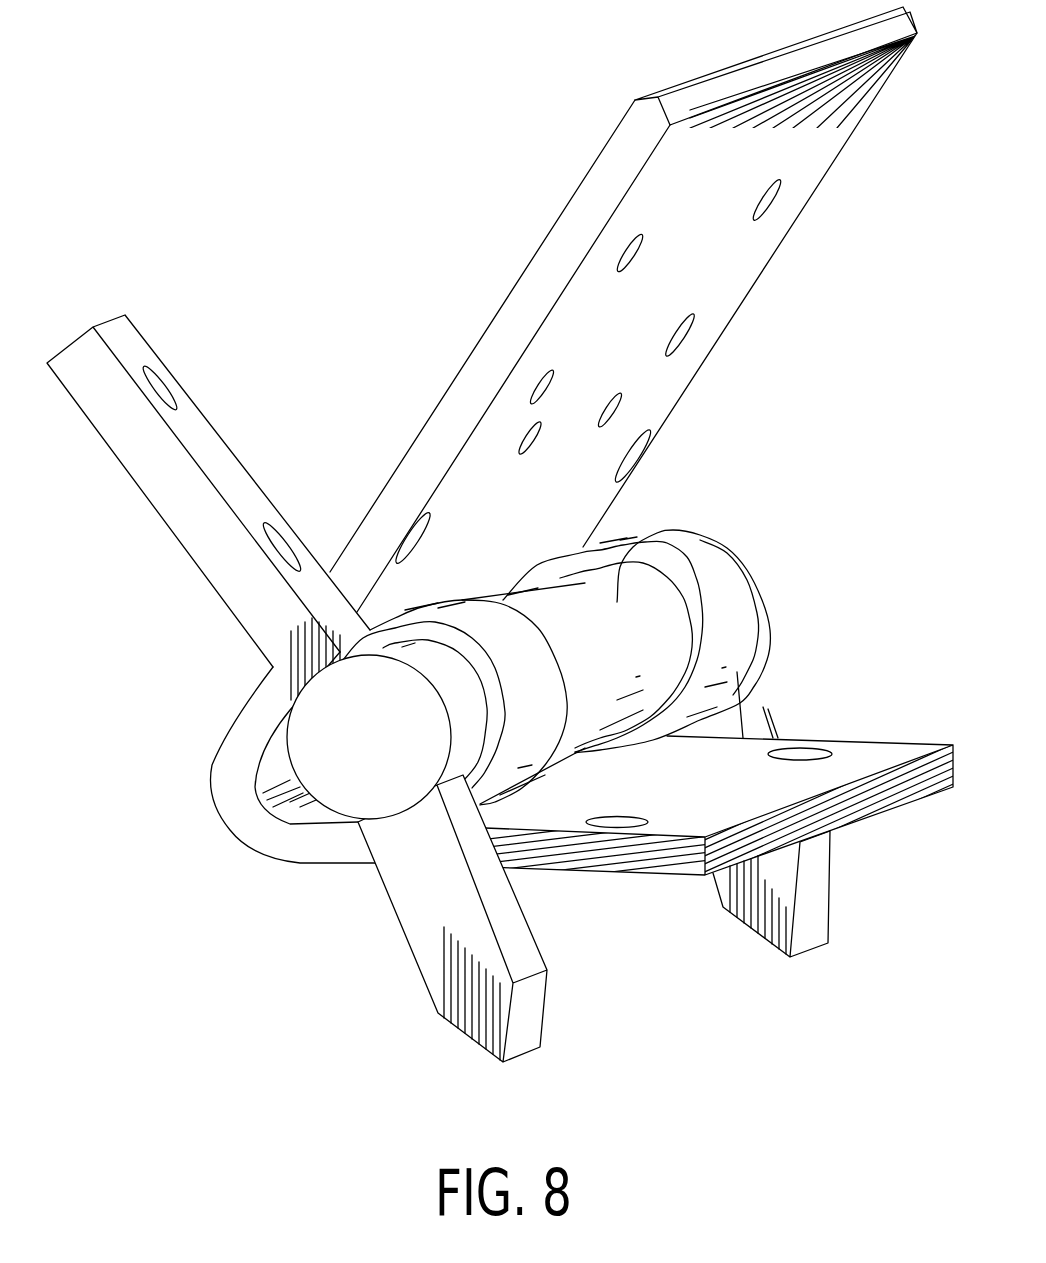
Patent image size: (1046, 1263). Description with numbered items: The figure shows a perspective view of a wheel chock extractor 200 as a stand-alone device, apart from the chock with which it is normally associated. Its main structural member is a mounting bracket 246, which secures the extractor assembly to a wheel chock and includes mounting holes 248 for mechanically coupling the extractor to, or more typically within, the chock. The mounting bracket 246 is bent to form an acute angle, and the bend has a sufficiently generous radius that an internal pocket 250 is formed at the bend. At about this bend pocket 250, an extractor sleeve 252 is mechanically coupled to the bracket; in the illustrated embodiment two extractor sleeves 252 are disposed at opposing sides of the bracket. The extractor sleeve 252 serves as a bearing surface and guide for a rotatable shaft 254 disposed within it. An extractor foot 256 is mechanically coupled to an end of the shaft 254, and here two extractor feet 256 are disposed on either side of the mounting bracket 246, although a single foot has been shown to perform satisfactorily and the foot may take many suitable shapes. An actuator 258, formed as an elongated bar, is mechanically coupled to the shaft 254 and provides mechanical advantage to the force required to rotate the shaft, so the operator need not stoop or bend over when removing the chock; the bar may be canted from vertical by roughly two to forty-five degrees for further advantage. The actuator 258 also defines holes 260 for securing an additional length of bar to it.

The wheel chock extractor 200 is at (293, 125).
The mounting bracket 246 is at (823, 128).
The mounting holes 248 is at (808, 748).
The internal pocket 250 is at (273, 800).
The extractor sleeve 252 is at (723, 594).
The rotatable shaft 254 is at (663, 533).
The extractor foot 256 is at (433, 947).
The actuator 258 is at (177, 493).
The holes 260 is at (277, 520).